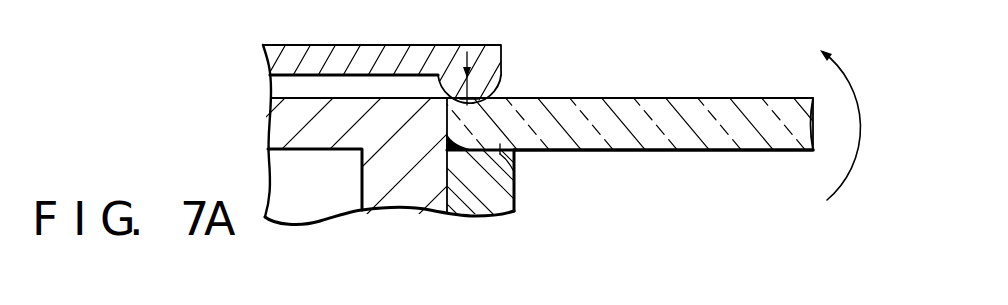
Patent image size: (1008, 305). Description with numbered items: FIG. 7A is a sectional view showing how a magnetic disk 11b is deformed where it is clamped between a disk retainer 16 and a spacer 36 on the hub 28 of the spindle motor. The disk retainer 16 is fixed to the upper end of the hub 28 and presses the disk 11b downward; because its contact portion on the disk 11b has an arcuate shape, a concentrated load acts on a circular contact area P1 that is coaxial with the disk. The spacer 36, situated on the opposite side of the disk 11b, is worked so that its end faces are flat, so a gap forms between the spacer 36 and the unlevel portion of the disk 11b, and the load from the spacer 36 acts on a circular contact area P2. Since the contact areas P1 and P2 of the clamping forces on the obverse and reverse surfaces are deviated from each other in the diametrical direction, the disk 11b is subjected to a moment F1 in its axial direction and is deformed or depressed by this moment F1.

The disk retainer 16 is at (367, 51).
The hub 28 is at (398, 198).
The spacer 36 is at (494, 204).
The magnetic disk 11b is at (712, 112).
The circular contact area P1 is at (496, 97).
The circular contact area P2 is at (515, 173).
The moment F1 is at (861, 135).